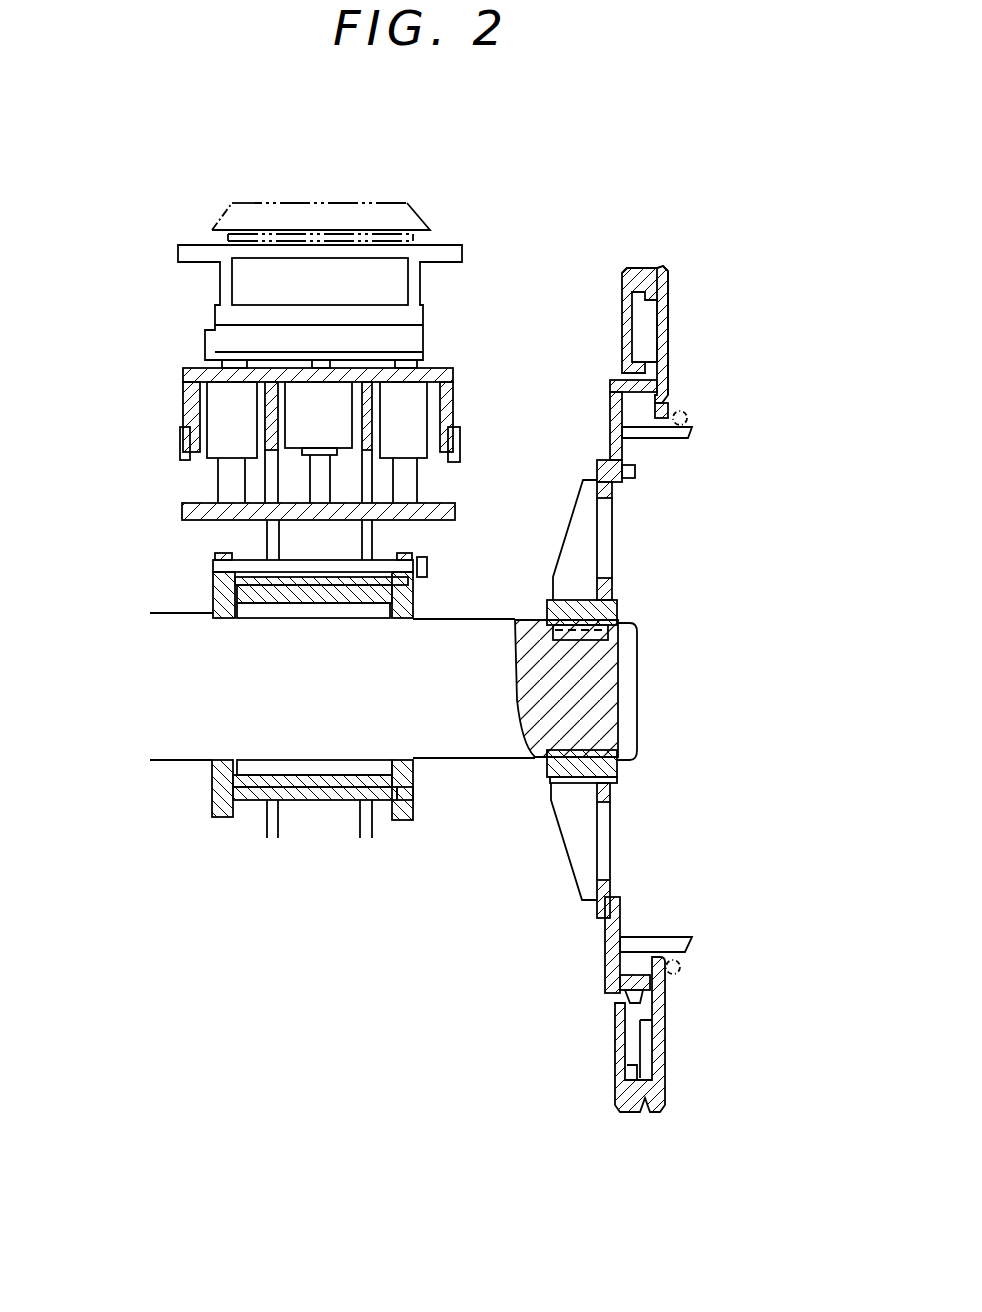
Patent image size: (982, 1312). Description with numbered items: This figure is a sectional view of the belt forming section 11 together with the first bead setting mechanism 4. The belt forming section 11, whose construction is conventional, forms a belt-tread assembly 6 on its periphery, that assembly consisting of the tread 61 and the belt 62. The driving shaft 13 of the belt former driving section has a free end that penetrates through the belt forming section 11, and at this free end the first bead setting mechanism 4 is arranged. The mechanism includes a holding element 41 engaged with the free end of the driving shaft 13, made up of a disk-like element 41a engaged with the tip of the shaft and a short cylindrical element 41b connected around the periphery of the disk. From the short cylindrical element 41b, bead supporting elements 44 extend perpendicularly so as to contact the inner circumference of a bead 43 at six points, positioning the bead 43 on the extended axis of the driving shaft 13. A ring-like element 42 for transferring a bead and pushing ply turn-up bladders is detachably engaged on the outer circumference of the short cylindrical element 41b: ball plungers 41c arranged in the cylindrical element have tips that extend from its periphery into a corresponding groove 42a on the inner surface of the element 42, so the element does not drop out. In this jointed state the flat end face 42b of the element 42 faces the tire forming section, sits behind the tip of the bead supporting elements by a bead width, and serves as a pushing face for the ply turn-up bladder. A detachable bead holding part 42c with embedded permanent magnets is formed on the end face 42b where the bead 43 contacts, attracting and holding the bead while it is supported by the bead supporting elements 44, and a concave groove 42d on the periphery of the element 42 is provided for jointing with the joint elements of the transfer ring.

The first bead setting mechanism 4 is at (832, 297).
The belt-tread assembly 6 is at (65, 147).
The belt forming section 11 is at (157, 377).
The driving shaft 13 is at (180, 760).
The holding element 41 is at (783, 457).
The disk-like element 41a is at (622, 497).
The short cylindrical element 41b is at (623, 456).
The ball plungers 41c is at (660, 981).
The element for transferring a bead and pushing ply turn-up bladders 42 is at (698, 357).
The groove 42a is at (605, 993).
The end face 42b is at (670, 312).
The bead holding part 42c is at (686, 408).
The concave groove 42d is at (636, 283).
The bead 43 is at (677, 963).
The bead supporting elements 44 is at (678, 937).
The tread 61 is at (227, 207).
The belt 62 is at (228, 238).